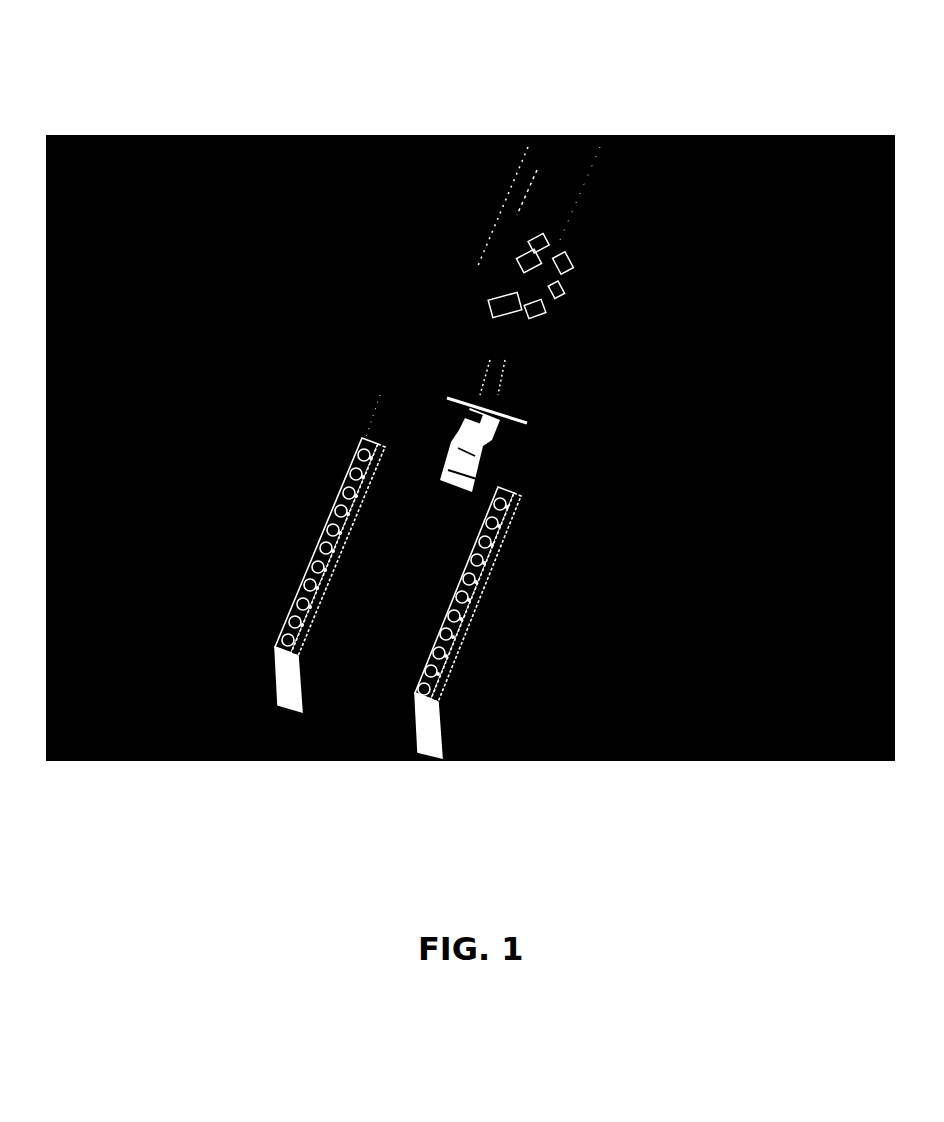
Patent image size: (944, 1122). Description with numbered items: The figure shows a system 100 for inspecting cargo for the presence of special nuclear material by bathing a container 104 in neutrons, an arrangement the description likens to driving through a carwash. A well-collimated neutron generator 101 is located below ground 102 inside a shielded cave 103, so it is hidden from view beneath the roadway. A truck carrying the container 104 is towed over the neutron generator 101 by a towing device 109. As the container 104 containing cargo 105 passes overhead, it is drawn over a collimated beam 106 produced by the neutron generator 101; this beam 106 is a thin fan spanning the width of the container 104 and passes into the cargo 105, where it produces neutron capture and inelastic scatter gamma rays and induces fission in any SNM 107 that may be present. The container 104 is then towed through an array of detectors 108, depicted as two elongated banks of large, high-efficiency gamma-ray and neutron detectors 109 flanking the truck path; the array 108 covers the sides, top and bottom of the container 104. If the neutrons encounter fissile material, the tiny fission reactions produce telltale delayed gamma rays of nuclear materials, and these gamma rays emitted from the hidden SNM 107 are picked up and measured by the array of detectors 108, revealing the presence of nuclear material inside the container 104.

The system 100 is at (356, 75).
The neutron generator 101 is at (615, 598).
The ground 102 is at (275, 135).
The shielded cave 103 is at (687, 535).
The container 104 is at (520, 135).
The cargo 105 is at (580, 310).
The collimated beam 106 is at (693, 469).
The SNM 107 is at (704, 240).
The array of detectors 108 is at (319, 596).
The towing device 109 is at (380, 393).